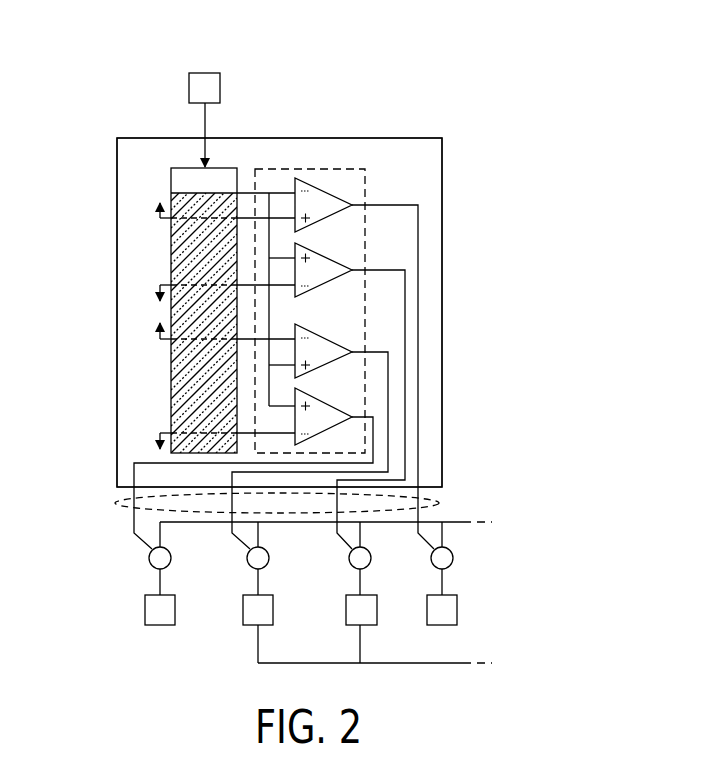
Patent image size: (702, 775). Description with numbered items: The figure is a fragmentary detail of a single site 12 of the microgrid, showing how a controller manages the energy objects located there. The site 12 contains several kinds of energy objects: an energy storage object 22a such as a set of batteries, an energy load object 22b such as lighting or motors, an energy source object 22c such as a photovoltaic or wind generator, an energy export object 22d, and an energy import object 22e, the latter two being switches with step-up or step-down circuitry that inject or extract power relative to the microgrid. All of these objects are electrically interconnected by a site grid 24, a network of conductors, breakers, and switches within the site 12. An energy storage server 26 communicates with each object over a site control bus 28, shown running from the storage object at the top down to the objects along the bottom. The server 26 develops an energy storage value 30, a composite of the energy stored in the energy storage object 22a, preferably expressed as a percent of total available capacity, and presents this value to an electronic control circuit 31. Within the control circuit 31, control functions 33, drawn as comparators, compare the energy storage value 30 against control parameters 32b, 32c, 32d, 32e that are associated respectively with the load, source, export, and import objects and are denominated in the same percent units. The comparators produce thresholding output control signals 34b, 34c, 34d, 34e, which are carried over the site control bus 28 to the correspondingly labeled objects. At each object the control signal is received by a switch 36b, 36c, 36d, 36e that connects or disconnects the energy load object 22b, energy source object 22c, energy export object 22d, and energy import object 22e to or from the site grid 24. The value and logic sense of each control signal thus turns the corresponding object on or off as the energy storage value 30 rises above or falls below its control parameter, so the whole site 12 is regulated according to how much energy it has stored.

The site 12 is at (500, 106).
The energy storage object 22a is at (189, 91).
The energy load object 22b is at (145, 610).
The energy source object 22c is at (457, 608).
The energy export object 22d is at (377, 608).
The energy import object 22e is at (243, 610).
The site grid 24 is at (448, 521).
The energy storage server 26 is at (153, 138).
The site control bus 28 is at (207, 130).
The energy storage value 30 is at (181, 184).
The electronic control circuit 31 is at (297, 168).
The control parameter 32b is at (183, 432).
The control parameter 32c is at (175, 226).
The control parameter 32d is at (183, 285).
The control parameter 32e is at (183, 345).
The control functions 33 is at (329, 257).
The control signal 34b is at (374, 440).
The control signal 34c is at (418, 222).
The control signal 34d is at (406, 292).
The control signal 34e is at (389, 375).
The switch 36b is at (149, 554).
The switch 36c is at (453, 554).
The switch 36d is at (349, 554).
The switch 36e is at (247, 554).